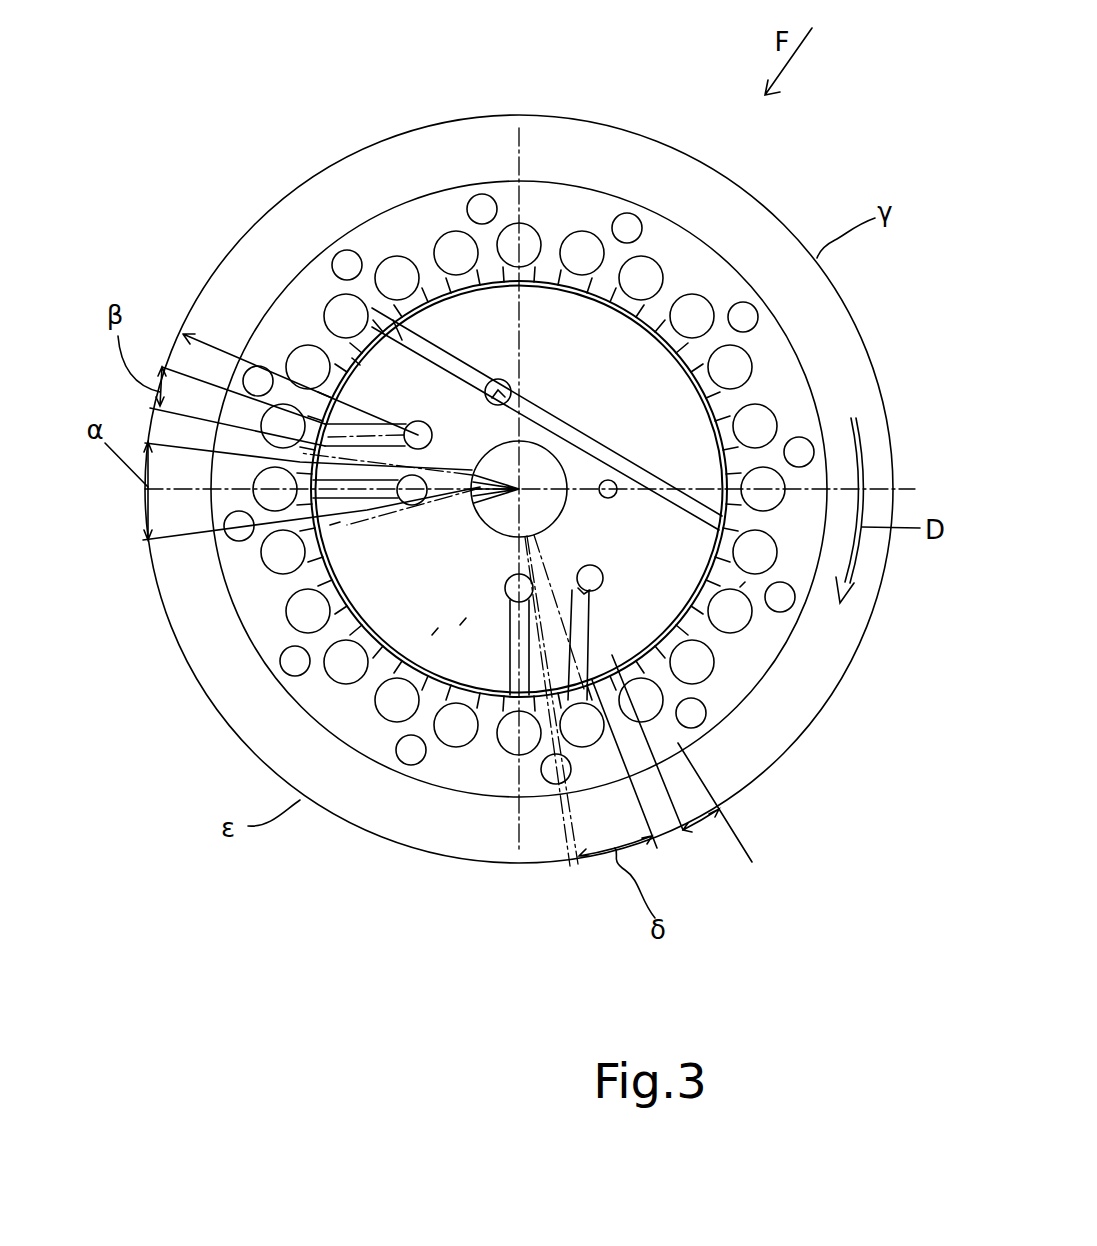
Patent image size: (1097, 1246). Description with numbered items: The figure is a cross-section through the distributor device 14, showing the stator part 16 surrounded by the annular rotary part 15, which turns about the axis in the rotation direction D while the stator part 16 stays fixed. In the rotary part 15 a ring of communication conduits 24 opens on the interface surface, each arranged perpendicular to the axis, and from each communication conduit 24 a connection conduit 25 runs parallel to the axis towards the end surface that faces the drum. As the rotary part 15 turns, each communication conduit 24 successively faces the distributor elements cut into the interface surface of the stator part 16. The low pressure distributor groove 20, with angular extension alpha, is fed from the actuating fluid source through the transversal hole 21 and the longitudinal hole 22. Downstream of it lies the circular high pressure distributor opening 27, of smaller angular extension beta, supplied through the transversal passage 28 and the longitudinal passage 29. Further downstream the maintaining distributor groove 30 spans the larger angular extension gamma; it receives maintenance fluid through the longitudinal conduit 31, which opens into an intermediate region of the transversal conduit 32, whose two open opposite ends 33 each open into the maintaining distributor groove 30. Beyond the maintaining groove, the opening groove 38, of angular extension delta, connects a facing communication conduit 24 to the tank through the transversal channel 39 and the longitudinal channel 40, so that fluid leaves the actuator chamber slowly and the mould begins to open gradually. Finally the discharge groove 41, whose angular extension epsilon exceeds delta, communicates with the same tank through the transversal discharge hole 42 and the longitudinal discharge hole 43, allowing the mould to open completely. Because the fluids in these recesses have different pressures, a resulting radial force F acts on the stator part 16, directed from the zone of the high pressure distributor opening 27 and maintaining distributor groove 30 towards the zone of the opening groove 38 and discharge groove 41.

The distributor device 14 is at (360, 955).
The rotary part 15 is at (665, 232).
The stator part 16 is at (640, 335).
The low pressure distributor groove 20 is at (472, 507).
The transversal hole 21 is at (330, 525).
The longitudinal hole 22 is at (357, 496).
The communication conduits 24 is at (551, 268).
The connection conduit 25 is at (733, 366).
The high pressure distributor opening 27 is at (281, 426).
The transversal passage 28 is at (406, 424).
The longitudinal passage 29 is at (352, 358).
The maintaining distributor groove 30 is at (465, 330).
The longitudinal conduit 31 is at (499, 378).
The transversal conduit 32 is at (740, 587).
The open opposite ends 33 is at (400, 338).
The opening groove 38 is at (589, 703).
The transversal channel 39 is at (732, 818).
The longitudinal channel 40 is at (705, 700).
The discharge groove 41 is at (460, 625).
The transversal discharge hole 42 is at (513, 670).
The longitudinal discharge hole 43 is at (432, 635).